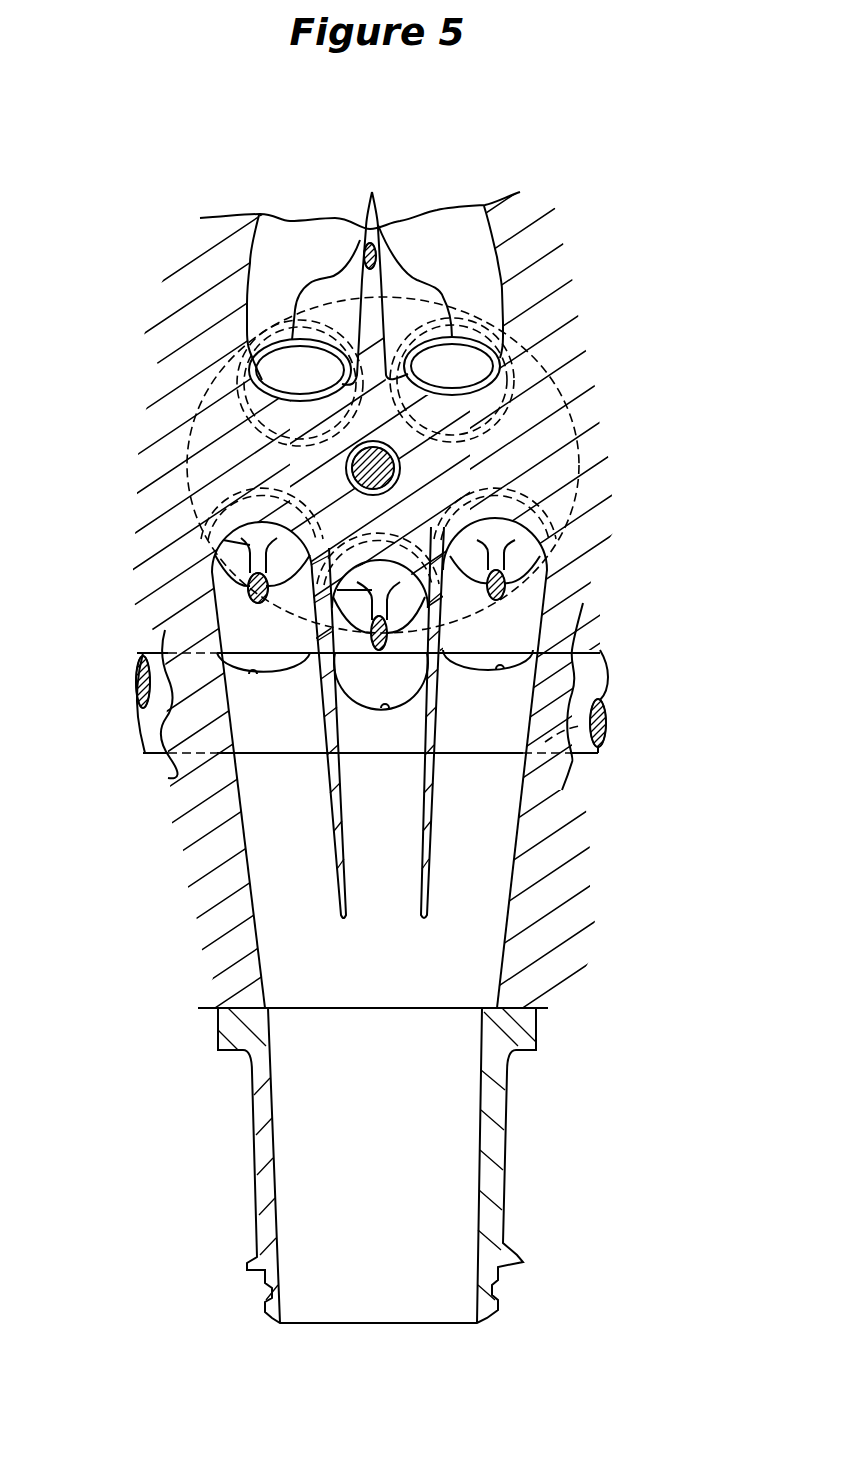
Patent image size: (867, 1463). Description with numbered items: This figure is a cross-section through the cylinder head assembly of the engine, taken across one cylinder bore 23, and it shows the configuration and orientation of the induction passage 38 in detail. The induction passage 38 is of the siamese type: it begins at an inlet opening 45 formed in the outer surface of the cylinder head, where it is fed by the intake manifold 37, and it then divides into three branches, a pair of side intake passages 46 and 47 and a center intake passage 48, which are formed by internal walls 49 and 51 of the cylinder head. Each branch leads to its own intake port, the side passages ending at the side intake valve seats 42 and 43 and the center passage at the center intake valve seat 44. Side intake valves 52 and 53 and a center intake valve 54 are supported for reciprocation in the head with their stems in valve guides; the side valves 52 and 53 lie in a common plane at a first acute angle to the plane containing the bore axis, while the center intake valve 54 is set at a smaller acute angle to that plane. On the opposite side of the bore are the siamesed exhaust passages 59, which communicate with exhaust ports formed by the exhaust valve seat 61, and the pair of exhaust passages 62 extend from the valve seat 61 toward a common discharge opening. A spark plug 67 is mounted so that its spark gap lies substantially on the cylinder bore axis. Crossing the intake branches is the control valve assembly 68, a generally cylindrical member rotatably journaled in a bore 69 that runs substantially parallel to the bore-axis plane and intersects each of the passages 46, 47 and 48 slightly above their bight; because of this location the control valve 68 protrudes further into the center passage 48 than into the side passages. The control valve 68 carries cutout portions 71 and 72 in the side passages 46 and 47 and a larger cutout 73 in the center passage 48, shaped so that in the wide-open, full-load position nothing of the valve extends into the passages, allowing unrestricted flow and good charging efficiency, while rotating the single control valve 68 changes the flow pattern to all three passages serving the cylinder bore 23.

The cylinder bore 23 is at (575, 443).
The intake manifold 37 is at (503, 1180).
The induction passage 38 is at (390, 945).
The side intake valve seat 42 is at (546, 582).
The side intake valve seat 43 is at (210, 573).
The center intake valve seat 44 is at (462, 658).
The inlet opening 45 is at (398, 997).
The side intake passage 46 is at (535, 622).
The side intake passage 47 is at (212, 630).
The center intake passage 48 is at (318, 652).
The internal wall 49 is at (432, 840).
The internal wall 51 is at (335, 816).
The side intake valve 52 is at (506, 551).
The side intake valve 53 is at (227, 540).
The center intake valve 54 is at (340, 646).
The exhaust passage 59 is at (352, 210).
The exhaust valve seat 61 is at (372, 192).
The exhaust passage 62 is at (300, 235).
The spark plug 67 is at (355, 476).
The control valve assembly 68 is at (131, 717).
The bore 69 is at (607, 723).
The cutout portion 71 is at (500, 672).
The cutout portion 72 is at (253, 676).
The cutout 73 is at (385, 710).